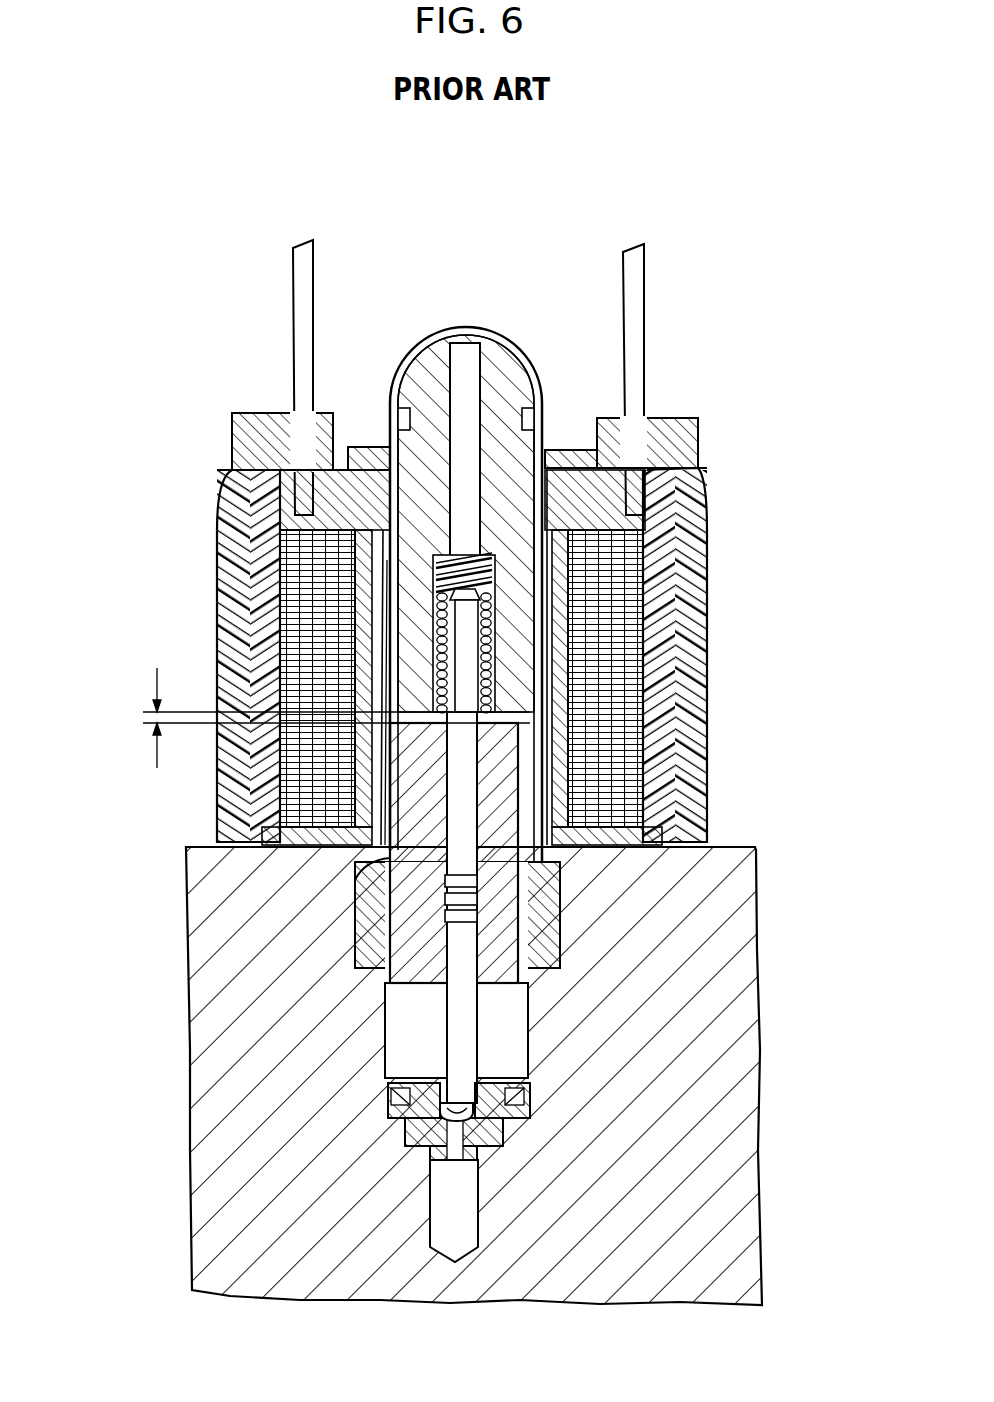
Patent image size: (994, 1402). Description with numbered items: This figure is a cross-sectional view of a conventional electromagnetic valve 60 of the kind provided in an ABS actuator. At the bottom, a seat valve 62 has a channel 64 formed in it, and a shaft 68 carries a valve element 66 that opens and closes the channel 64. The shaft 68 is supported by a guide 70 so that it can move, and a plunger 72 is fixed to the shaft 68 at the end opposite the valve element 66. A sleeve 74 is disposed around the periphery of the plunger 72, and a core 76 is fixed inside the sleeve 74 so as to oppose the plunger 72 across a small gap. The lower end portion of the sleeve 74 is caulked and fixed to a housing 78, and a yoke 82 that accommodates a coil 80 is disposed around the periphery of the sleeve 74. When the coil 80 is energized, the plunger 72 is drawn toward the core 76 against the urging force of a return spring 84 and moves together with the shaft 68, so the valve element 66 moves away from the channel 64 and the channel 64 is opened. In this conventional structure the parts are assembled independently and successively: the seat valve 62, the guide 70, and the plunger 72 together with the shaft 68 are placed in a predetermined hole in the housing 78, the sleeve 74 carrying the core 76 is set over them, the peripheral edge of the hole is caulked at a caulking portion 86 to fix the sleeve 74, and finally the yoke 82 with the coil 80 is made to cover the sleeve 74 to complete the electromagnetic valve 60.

The electromagnetic valve 60 is at (456, 790).
The seat valve 62 is at (407, 1143).
The channel 64 is at (457, 1125).
The valve element 66 is at (463, 1120).
The shaft 68 is at (463, 786).
The guide 70 is at (410, 1042).
The plunger 72 is at (498, 812).
The sleeve 74 is at (515, 337).
The core 76 is at (515, 458).
The housing 78 is at (252, 1122).
The coil 80 is at (318, 606).
The yoke 82 is at (232, 520).
The return spring 84 is at (590, 585).
The caulking portion 86 is at (560, 865).